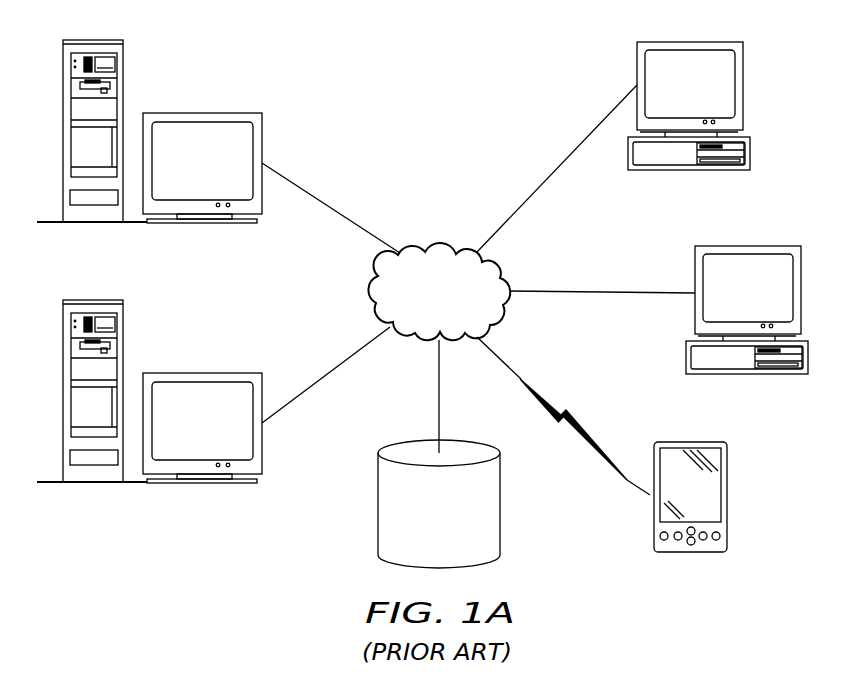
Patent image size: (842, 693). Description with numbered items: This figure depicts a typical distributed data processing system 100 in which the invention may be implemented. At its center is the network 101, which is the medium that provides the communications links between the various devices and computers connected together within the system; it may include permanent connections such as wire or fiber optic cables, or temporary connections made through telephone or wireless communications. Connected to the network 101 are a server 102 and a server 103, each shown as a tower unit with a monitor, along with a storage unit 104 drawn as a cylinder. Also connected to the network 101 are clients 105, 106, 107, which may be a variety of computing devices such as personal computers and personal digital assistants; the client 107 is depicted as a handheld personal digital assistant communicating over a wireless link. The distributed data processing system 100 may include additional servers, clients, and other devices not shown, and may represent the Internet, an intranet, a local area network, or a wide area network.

The distributed data processing system 100 is at (498, 75).
The network 101 is at (420, 318).
The server 102 is at (223, 431).
The server 103 is at (223, 171).
The storage unit 104 is at (421, 540).
The client 105 is at (670, 95).
The client 106 is at (728, 299).
The client 107 is at (727, 495).